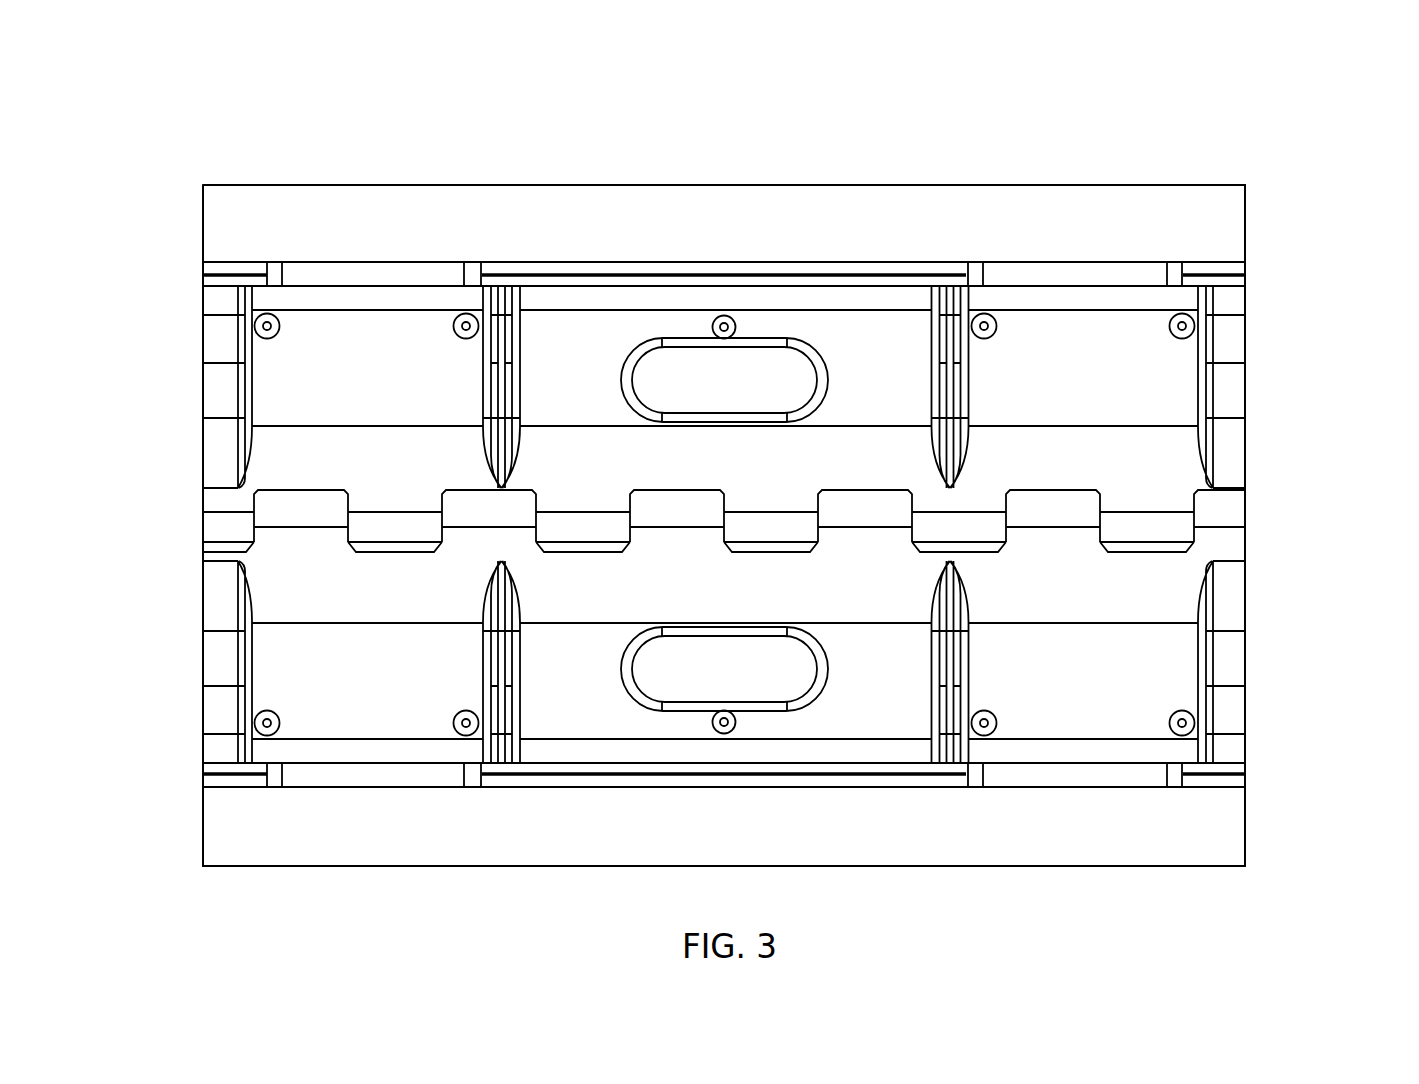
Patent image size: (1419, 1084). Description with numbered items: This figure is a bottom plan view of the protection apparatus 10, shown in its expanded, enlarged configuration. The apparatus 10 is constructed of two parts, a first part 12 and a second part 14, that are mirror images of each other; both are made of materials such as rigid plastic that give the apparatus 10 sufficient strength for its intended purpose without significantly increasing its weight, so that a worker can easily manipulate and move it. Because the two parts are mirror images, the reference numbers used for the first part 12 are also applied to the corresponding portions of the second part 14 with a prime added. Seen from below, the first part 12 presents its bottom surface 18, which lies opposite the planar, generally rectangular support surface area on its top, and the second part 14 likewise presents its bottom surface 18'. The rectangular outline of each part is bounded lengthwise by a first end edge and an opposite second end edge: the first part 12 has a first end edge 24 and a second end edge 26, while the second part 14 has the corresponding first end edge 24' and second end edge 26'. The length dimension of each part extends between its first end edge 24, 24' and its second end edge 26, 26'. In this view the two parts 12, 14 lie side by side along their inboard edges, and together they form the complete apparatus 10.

The protection apparatus 10 is at (929, 136).
The first part 12 is at (1272, 699).
The second part 14 is at (1290, 340).
The bottom surface 18 is at (786, 662).
The bottom surface 18' is at (797, 387).
The first end edge 24 is at (774, 769).
The first end edge 24' is at (776, 292).
The second end edge 26 is at (178, 662).
The second end edge 26' is at (182, 387).